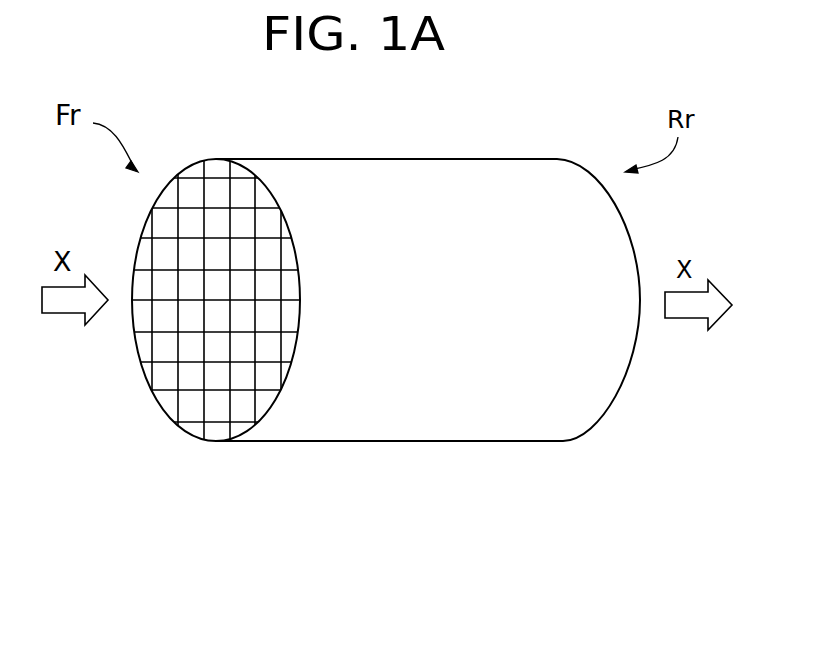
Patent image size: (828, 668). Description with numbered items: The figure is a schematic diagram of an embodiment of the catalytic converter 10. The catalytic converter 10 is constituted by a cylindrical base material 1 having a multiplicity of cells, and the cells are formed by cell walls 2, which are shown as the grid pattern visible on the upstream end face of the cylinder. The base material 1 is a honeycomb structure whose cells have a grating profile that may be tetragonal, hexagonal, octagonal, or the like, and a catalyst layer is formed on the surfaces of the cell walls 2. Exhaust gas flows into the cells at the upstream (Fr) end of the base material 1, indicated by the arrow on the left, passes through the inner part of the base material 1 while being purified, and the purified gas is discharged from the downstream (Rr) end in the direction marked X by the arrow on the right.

The base material 1 is at (428, 172).
The cell walls 2 is at (177, 368).
The catalytic converter 10 is at (365, 314).